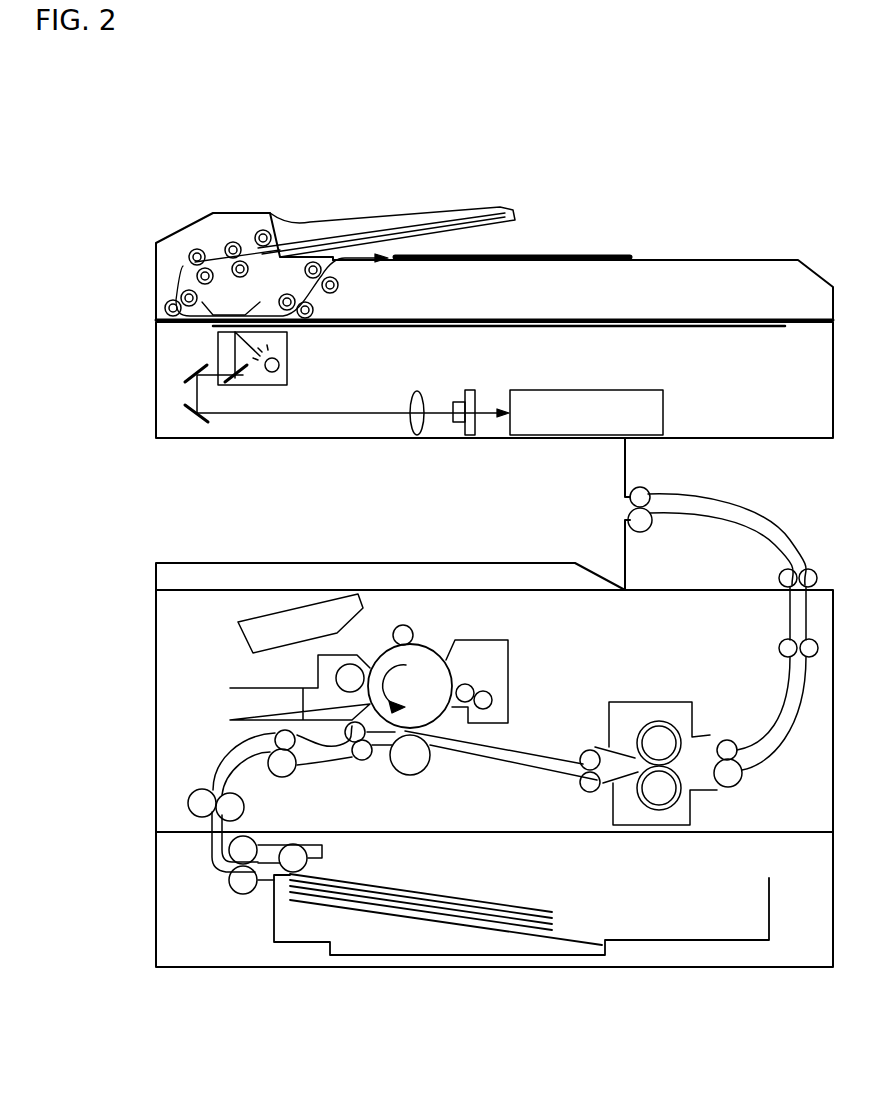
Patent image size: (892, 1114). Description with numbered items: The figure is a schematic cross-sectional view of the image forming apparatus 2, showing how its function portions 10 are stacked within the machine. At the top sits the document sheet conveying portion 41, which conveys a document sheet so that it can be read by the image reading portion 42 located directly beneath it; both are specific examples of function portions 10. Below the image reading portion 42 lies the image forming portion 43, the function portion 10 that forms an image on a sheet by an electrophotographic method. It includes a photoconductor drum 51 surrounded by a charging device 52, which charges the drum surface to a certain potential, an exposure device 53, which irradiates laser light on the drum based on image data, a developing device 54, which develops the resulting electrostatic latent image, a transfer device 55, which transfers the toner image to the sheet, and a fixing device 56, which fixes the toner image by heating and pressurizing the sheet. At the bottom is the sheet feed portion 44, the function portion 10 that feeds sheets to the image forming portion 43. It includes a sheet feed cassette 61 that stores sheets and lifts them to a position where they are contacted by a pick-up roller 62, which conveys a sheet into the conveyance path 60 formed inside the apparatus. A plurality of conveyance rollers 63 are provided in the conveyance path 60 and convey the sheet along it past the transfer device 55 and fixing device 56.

The image forming apparatus 2 is at (142, 173).
The function portion 10 is at (437, 702).
The document sheet conveying portion 41 is at (156, 262).
The image reading portion 42 is at (156, 386).
The image forming portion 43 is at (183, 615).
The sheet feed portion 44 is at (156, 907).
The photoconductor drum 51 is at (437, 652).
The charging device 52 is at (395, 635).
The exposure device 53 is at (240, 640).
The developing device 54 is at (318, 662).
The transfer device 55 is at (412, 775).
The fixing device 56 is at (660, 700).
The conveyance path 60 is at (215, 755).
The sheet feed cassette 61 is at (274, 912).
The pick-up roller 62 is at (298, 845).
The conveyance rollers 63 is at (190, 800).